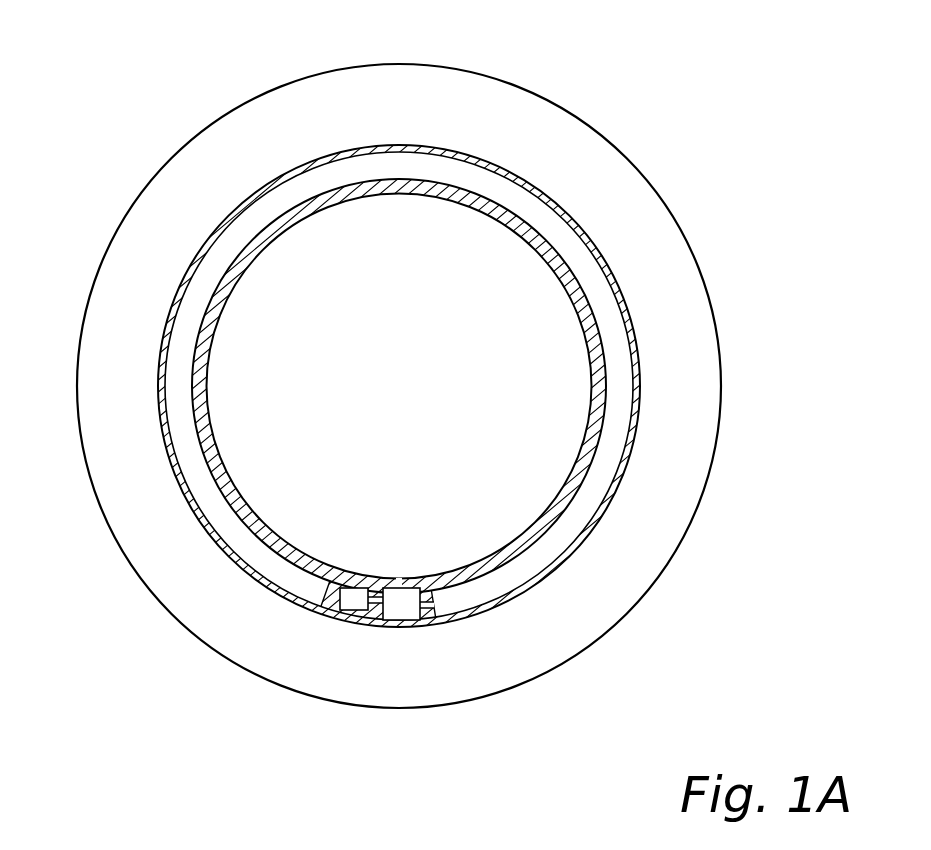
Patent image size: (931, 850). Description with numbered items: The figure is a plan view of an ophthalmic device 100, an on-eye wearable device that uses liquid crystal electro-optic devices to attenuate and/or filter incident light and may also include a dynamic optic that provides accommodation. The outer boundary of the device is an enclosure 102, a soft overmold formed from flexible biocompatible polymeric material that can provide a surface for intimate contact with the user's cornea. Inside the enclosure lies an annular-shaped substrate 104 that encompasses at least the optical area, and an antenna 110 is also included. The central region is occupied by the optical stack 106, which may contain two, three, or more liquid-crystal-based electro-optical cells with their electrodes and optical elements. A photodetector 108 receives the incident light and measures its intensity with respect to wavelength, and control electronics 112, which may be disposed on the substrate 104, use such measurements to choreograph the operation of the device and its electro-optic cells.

The ophthalmic device 100 is at (158, 85).
The enclosure 102 is at (78, 432).
The substrate 104 is at (588, 535).
The optical stack 106 is at (355, 340).
The photodetector 108 is at (343, 612).
The antenna 110 is at (527, 572).
The control electronics 112 is at (398, 612).